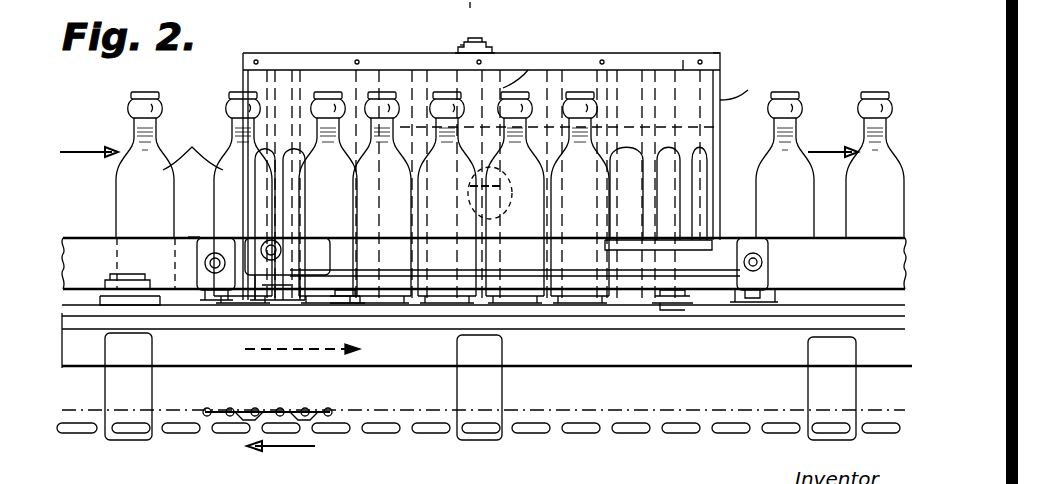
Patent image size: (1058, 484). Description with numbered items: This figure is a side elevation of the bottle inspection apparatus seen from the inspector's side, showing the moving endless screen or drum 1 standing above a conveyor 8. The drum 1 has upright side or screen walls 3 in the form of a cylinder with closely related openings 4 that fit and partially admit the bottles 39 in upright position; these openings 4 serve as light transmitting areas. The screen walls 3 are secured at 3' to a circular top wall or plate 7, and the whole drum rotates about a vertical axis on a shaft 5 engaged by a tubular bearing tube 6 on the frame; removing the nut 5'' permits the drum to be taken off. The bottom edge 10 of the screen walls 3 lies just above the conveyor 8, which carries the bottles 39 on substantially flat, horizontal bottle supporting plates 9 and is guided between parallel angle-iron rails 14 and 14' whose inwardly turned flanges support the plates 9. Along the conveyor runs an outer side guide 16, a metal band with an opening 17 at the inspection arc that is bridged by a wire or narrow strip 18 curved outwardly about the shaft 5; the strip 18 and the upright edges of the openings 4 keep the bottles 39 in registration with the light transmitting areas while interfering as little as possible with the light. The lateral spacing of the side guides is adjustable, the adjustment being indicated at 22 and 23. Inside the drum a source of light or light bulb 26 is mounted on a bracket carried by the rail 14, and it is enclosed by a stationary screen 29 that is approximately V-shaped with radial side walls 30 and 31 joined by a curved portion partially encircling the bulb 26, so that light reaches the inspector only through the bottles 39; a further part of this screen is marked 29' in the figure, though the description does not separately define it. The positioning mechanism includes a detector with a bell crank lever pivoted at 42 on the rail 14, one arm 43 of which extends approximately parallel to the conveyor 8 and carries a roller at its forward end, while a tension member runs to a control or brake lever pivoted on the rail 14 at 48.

The moving endless screen or drum 1 is at (722, 78).
The upright side or screen walls 3 is at (744, 81).
The top attachment of sidewall 3' is at (747, 29).
The openings 4 is at (680, 186).
The shaft 5 is at (476, 29).
The nut 5'' is at (434, 26).
The tubular bearing tube 6 is at (503, 88).
The circular top wall or plate 7 is at (628, 60).
The conveyor 8 is at (333, 307).
The bottle supporting plates 9 is at (152, 292).
The bottom edge 10 is at (350, 340).
The guiding and supporting rail 14 is at (484, 144).
The guiding and supporting rail 14' is at (480, 386).
The outer side guide 16 is at (82, 237).
The space or opening 17 is at (200, 250).
The wire or narrow strip 18 is at (395, 300).
The adjustment 22 is at (218, 302).
The adjustment 23 is at (706, 52).
The source of light or light bulb 26 is at (445, 183).
The stationary screen 29 is at (516, 193).
The gripper ring 29' is at (709, 48).
The radial side wall 30 is at (372, 112).
The radial side wall 31 is at (616, 100).
The bottles 39 is at (193, 145).
The pivot 42 is at (112, 297).
The arm 43 is at (190, 237).
The pivot 48 is at (672, 303).